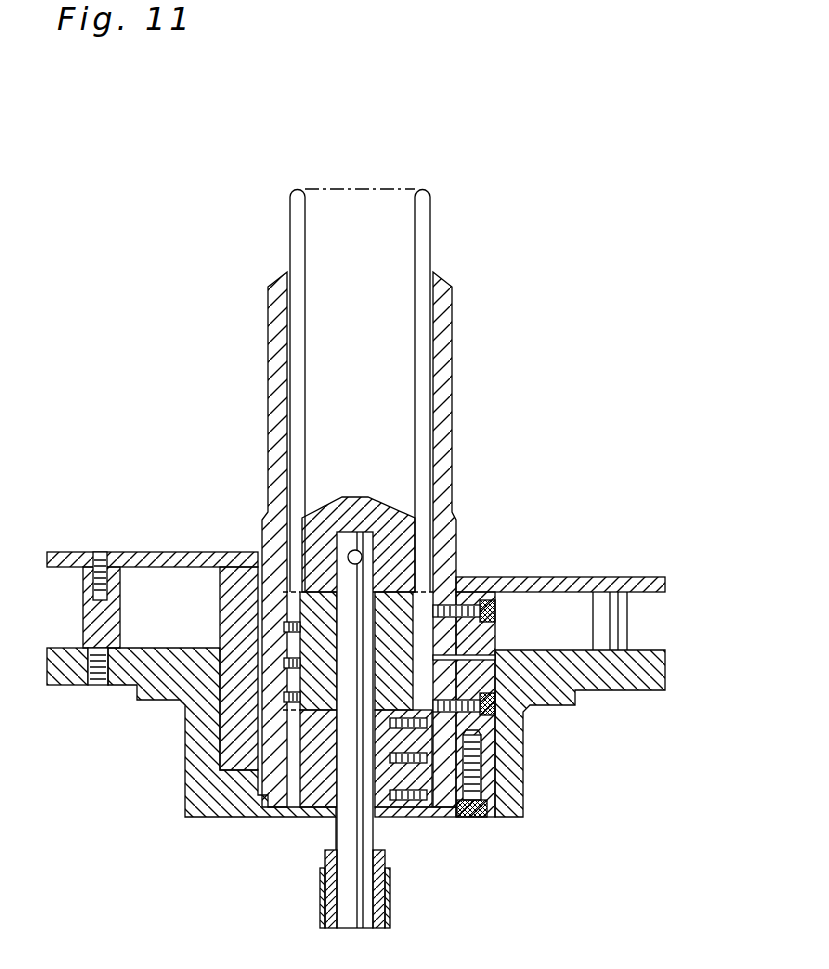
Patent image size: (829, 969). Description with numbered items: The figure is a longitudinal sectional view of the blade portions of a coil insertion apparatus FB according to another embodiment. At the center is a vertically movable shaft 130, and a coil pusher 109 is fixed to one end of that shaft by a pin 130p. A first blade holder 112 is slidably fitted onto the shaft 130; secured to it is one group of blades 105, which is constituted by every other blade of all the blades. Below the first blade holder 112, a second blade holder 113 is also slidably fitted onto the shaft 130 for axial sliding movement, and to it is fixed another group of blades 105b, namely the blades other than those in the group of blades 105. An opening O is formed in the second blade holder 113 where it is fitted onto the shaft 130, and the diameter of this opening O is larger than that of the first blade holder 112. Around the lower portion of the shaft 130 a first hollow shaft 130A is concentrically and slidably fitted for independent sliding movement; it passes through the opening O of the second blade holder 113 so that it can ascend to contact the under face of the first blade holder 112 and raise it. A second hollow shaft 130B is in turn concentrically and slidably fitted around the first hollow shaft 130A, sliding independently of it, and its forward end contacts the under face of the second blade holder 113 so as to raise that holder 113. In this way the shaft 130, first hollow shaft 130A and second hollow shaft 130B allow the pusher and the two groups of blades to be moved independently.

The coil insertion apparatus FB is at (580, 116).
The blades 105 is at (293, 235).
The blades 105b is at (424, 232).
The coil pusher 109 is at (377, 510).
The first blade holder 112 is at (325, 605).
The second blade holder 113 is at (395, 775).
The vertically movable shaft 130 is at (362, 582).
The pin 130p is at (350, 552).
The opening O is at (335, 815).
The first hollow shaft 130A is at (383, 858).
The second hollow shaft 130B is at (388, 898).